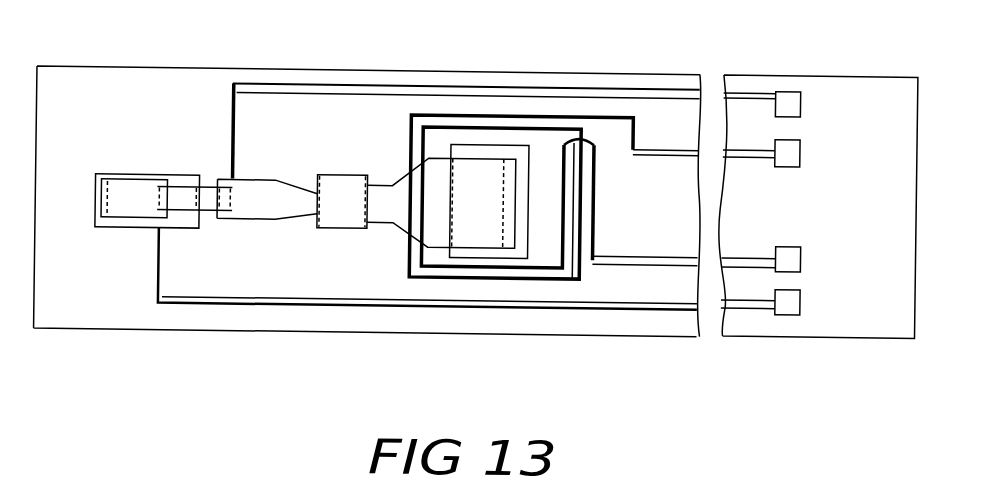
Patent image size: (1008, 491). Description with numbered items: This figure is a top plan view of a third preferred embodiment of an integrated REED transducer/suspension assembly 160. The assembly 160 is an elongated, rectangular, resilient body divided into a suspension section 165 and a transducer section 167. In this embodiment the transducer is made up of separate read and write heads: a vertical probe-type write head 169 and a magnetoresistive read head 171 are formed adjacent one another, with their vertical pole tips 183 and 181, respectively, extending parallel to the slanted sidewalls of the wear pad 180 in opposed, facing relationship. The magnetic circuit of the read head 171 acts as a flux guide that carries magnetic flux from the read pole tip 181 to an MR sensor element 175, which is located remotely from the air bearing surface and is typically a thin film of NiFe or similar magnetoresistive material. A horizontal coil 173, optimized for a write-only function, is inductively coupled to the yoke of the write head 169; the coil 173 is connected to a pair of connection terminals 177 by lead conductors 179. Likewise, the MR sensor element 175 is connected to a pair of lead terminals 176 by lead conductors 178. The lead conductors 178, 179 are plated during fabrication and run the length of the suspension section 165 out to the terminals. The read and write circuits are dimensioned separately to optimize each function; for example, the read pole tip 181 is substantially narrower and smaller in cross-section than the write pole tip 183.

The integrated REED transducer/suspension assembly 160 is at (612, 345).
The suspension section 165 is at (680, 66).
The transducer section 167 is at (254, 63).
The vertical probe-type write head 169 is at (538, 141).
The magnetoresistive read head 171 is at (113, 162).
The horizontal coil 173 is at (571, 100).
The MR sensor element 175 is at (187, 188).
The lead terminals 176 is at (801, 94).
The connection terminals 177 is at (787, 157).
The lead conductors 178 is at (628, 80).
The lead conductors 179 is at (657, 149).
The wear pad 180 is at (335, 224).
The read head vertical pole tip 181 is at (312, 211).
The write head vertical pole tip 183 is at (367, 214).